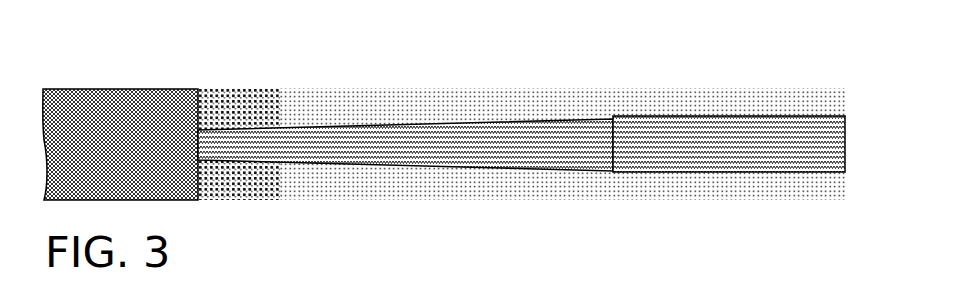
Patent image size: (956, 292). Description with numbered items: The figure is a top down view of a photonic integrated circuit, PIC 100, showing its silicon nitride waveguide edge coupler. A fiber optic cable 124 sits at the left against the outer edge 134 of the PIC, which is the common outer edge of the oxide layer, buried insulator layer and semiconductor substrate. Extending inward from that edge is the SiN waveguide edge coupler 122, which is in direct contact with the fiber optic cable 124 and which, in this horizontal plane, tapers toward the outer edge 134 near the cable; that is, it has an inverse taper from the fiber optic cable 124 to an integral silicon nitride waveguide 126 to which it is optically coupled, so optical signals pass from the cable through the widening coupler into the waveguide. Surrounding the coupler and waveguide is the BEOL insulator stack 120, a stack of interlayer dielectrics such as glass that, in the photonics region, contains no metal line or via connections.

The PIC 100 is at (521, 133).
The BEOL insulator stack 120 is at (355, 102).
The SiN waveguide edge coupler 122 is at (505, 142).
The fiber optic cable 124 is at (133, 82).
The silicon nitride waveguide 126 is at (707, 135).
The outer edge 134 is at (198, 177).